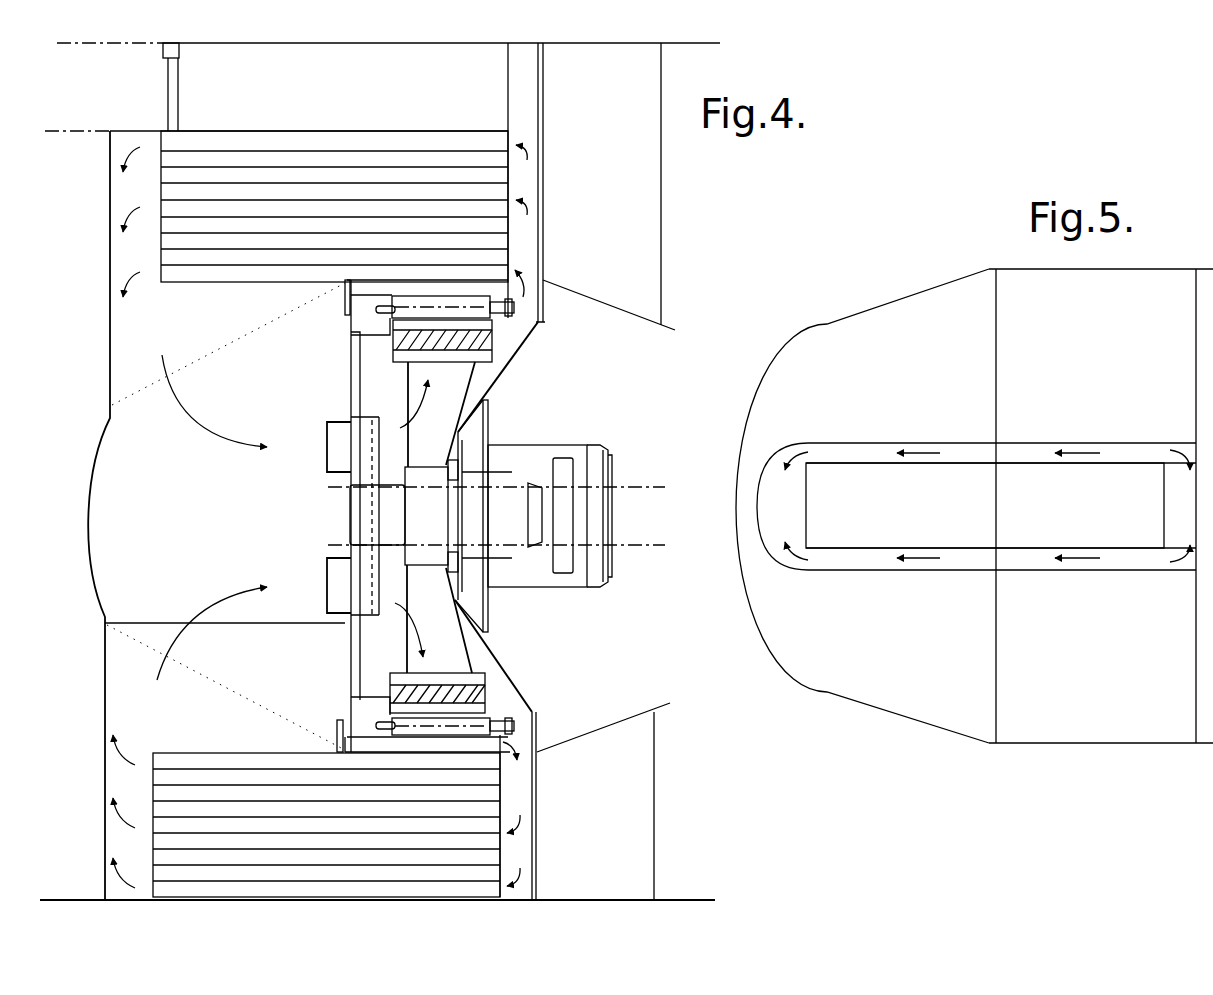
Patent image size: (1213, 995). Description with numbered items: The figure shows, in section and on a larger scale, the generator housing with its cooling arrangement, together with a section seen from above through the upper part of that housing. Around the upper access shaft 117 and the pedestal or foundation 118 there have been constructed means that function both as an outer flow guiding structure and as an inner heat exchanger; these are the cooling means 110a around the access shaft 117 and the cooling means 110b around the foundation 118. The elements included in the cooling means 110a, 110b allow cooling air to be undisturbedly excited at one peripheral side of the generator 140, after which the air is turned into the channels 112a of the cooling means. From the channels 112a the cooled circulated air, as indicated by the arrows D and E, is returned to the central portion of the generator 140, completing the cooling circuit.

In FIG. 4, the upper access shaft 117 is at (256, 153).
In FIG. 5, the upper access shaft 117 is at (964, 463).
In FIG. 4, the pedestal or foundation 118 is at (235, 773).
In FIG. 4, the cooling means 110a is at (495, 175).
In FIG. 5, the cooling means 110a is at (1044, 443).
In FIG. 4, the cooling means 110b is at (487, 792).
In FIG. 4, the generator 140 is at (505, 293).
In FIG. 5, the channels 112a is at (1034, 558).
In FIG. 4, the arrow D is at (215, 428).
In FIG. 5, the arrow D is at (921, 455).
In FIG. 4, the arrow E is at (212, 598).